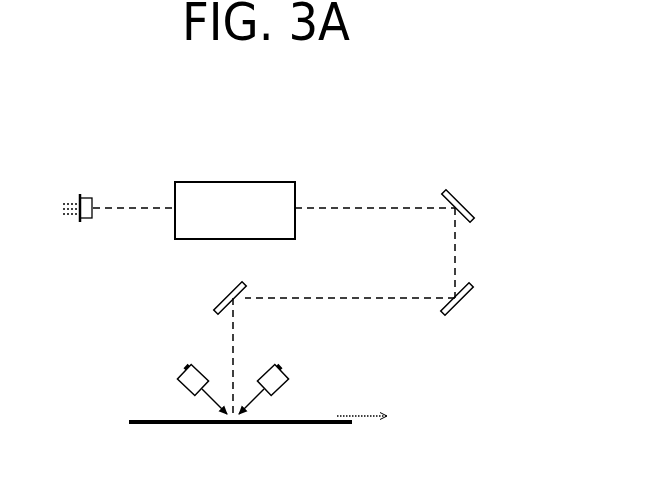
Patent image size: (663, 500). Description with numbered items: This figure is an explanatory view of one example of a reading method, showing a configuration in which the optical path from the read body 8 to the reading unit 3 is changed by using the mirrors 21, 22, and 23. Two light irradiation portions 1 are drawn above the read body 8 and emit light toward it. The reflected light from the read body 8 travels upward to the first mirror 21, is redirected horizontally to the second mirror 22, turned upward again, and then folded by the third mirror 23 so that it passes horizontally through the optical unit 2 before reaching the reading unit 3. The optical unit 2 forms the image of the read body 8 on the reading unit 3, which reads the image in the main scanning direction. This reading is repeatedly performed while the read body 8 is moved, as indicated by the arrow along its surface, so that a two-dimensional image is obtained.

The light irradiation portion 1 is at (163, 377).
The optical unit 2 is at (239, 181).
The reading unit 3 is at (85, 197).
The read body 8 is at (298, 425).
The mirror 21 is at (220, 300).
The mirror 22 is at (469, 298).
The mirror 23 is at (452, 194).